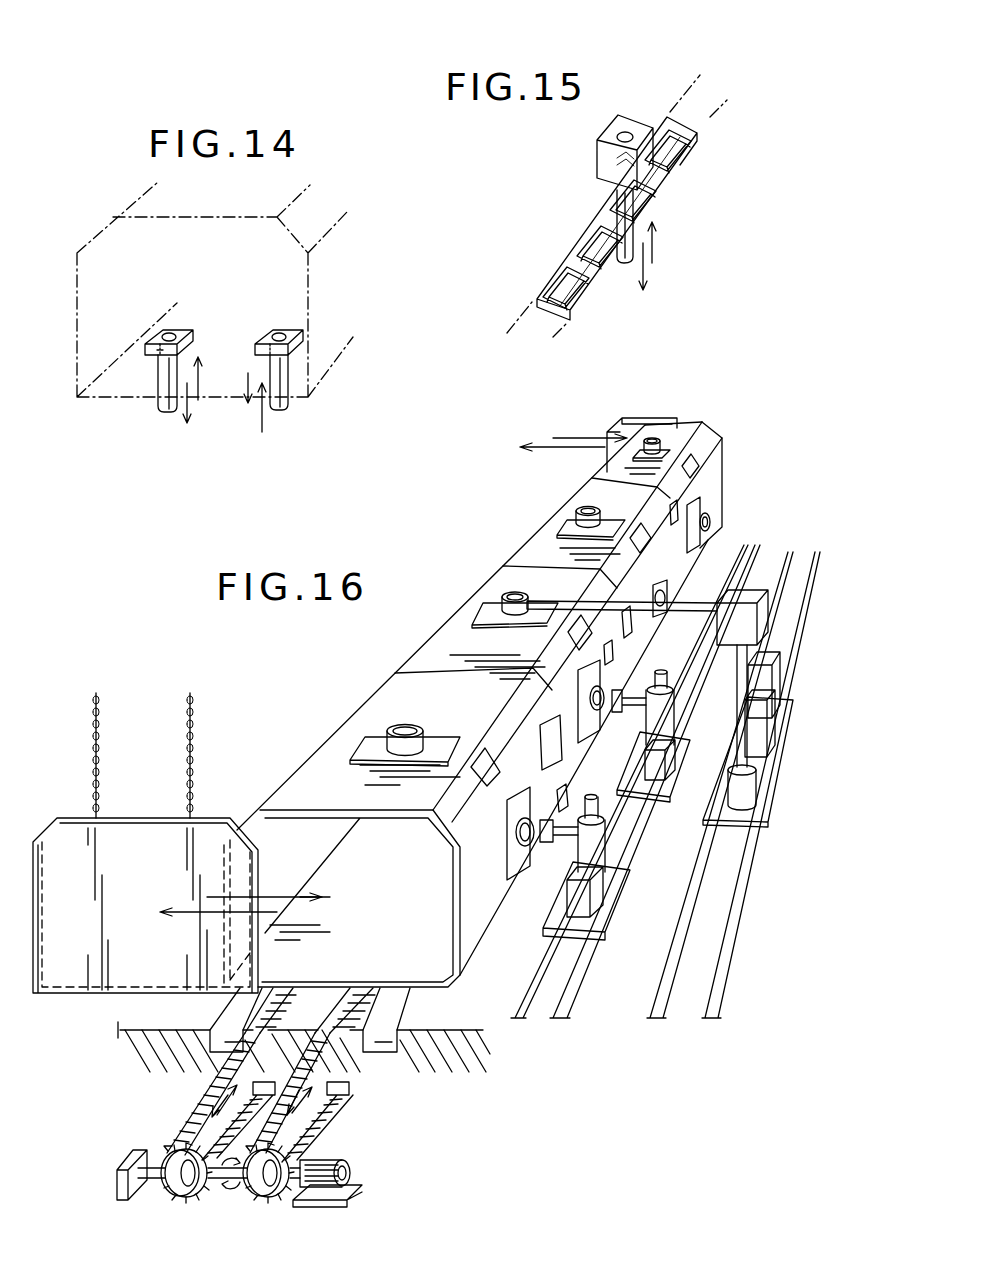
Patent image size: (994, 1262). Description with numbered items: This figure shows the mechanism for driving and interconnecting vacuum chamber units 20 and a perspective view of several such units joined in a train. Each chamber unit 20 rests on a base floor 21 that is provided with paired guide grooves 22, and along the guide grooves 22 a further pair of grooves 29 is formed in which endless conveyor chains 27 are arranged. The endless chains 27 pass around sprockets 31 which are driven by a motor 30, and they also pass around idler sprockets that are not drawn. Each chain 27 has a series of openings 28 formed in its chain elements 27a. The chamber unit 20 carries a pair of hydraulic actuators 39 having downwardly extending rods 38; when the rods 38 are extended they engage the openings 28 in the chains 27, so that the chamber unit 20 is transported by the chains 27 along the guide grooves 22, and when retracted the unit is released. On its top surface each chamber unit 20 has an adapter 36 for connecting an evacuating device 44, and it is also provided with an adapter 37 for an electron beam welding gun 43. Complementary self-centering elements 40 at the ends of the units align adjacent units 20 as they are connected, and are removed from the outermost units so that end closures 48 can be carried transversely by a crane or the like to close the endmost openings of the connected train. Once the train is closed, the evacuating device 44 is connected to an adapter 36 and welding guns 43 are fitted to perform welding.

In FIG. 14, the vacuum chamber unit 20 is at (302, 267).
In FIG. 16, the vacuum chamber unit 20 is at (608, 472).
In FIG. 16, the base floor 21 is at (442, 1060).
In FIG. 16, the guide grooves 22 is at (218, 1076).
In FIG. 15, the endless conveyor chains 27 is at (699, 175).
In FIG. 16, the endless conveyor chains 27 is at (197, 1118).
In FIG. 15, the chain elements 27a is at (653, 213).
In FIG. 15, the openings 28 is at (598, 242).
In FIG. 16, the grooves 29 is at (283, 1028).
In FIG. 16, the motor 30 is at (340, 1160).
In FIG. 16, the sprockets 31 is at (188, 1192).
In FIG. 16, the adapter 36 is at (662, 445).
In FIG. 16, the adapter 37 is at (520, 840).
In FIG. 14, the rods 38 is at (167, 410).
In FIG. 15, the rods 38 is at (623, 263).
In FIG. 14, the hydraulic actuators 39 is at (177, 333).
In FIG. 15, the hydraulic actuators 39 is at (625, 130).
In FIG. 16, the bracket 40 is at (542, 747).
In FIG. 16, the electron beam welding guns 43 is at (612, 897).
In FIG. 16, the evacuating device 44 is at (763, 762).
In FIG. 16, the end closures 48 is at (90, 985).